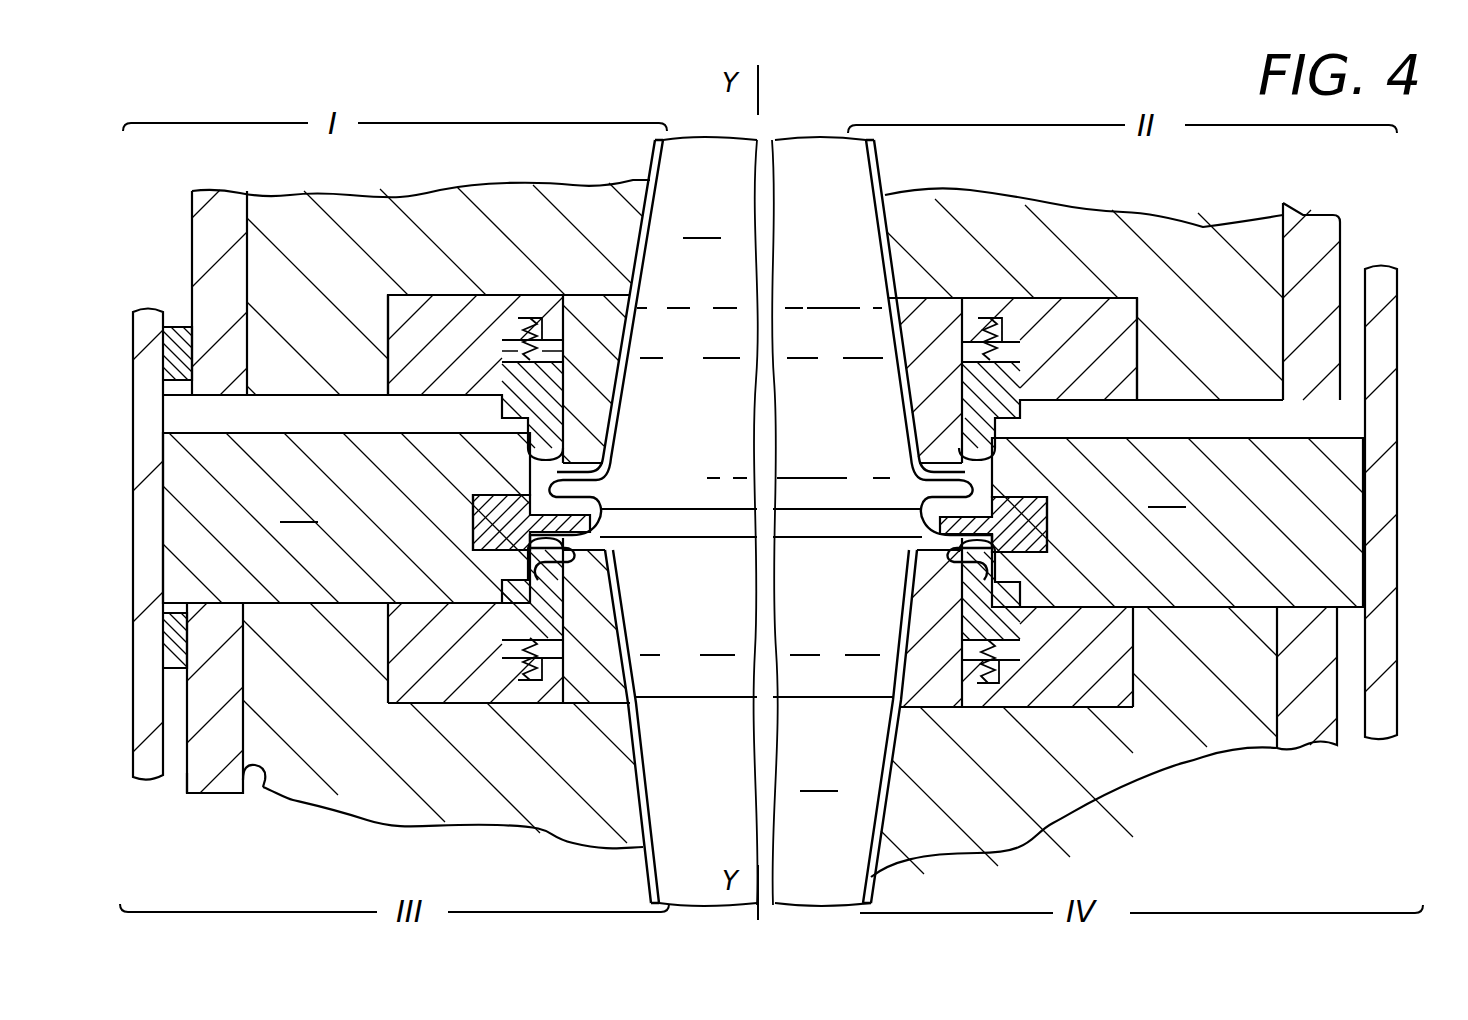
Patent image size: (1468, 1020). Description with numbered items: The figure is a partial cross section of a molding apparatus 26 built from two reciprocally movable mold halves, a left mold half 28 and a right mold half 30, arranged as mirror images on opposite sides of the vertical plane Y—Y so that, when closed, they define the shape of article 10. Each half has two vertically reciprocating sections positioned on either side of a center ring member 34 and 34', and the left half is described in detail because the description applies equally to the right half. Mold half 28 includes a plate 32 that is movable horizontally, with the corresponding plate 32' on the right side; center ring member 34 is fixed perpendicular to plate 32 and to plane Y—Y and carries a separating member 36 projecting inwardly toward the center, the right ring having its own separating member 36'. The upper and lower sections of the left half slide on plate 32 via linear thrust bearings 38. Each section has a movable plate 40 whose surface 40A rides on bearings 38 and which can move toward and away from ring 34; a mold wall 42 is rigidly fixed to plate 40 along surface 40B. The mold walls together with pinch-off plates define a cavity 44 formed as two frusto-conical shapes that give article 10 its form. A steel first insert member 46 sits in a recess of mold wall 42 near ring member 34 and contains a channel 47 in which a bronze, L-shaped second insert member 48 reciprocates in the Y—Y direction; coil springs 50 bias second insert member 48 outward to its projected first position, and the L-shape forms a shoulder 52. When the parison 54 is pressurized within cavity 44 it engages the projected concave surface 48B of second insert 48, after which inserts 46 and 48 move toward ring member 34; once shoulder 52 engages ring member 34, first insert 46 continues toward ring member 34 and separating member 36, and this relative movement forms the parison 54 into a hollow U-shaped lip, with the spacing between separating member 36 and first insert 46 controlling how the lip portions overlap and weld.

The article 10 is at (650, 166).
The molding apparatus 26 is at (328, 176).
The left mold half 28 is at (127, 544).
The right mold half 30 is at (1406, 450).
The plate 32 is at (118, 544).
The flange plate 32' is at (1411, 482).
The center ring member 34 is at (346, 518).
The center ring member 34' is at (1177, 522).
The separating member 36 is at (483, 512).
The clamping ring 36' is at (1027, 523).
The linear thrust bearings 38 is at (185, 328).
The movable plate 40 is at (220, 190).
The surface 40A is at (187, 775).
The surface 40B is at (260, 788).
The mold wall 42 is at (395, 195).
The cavity 44 is at (763, 498).
The first insert member 46 is at (598, 339).
The channel 47 is at (560, 342).
The second insert member 48 is at (556, 392).
The concave surface 48B is at (563, 452).
The coil springs 50 is at (530, 318).
The shoulder 52 is at (505, 421).
The parison 54 is at (607, 477).